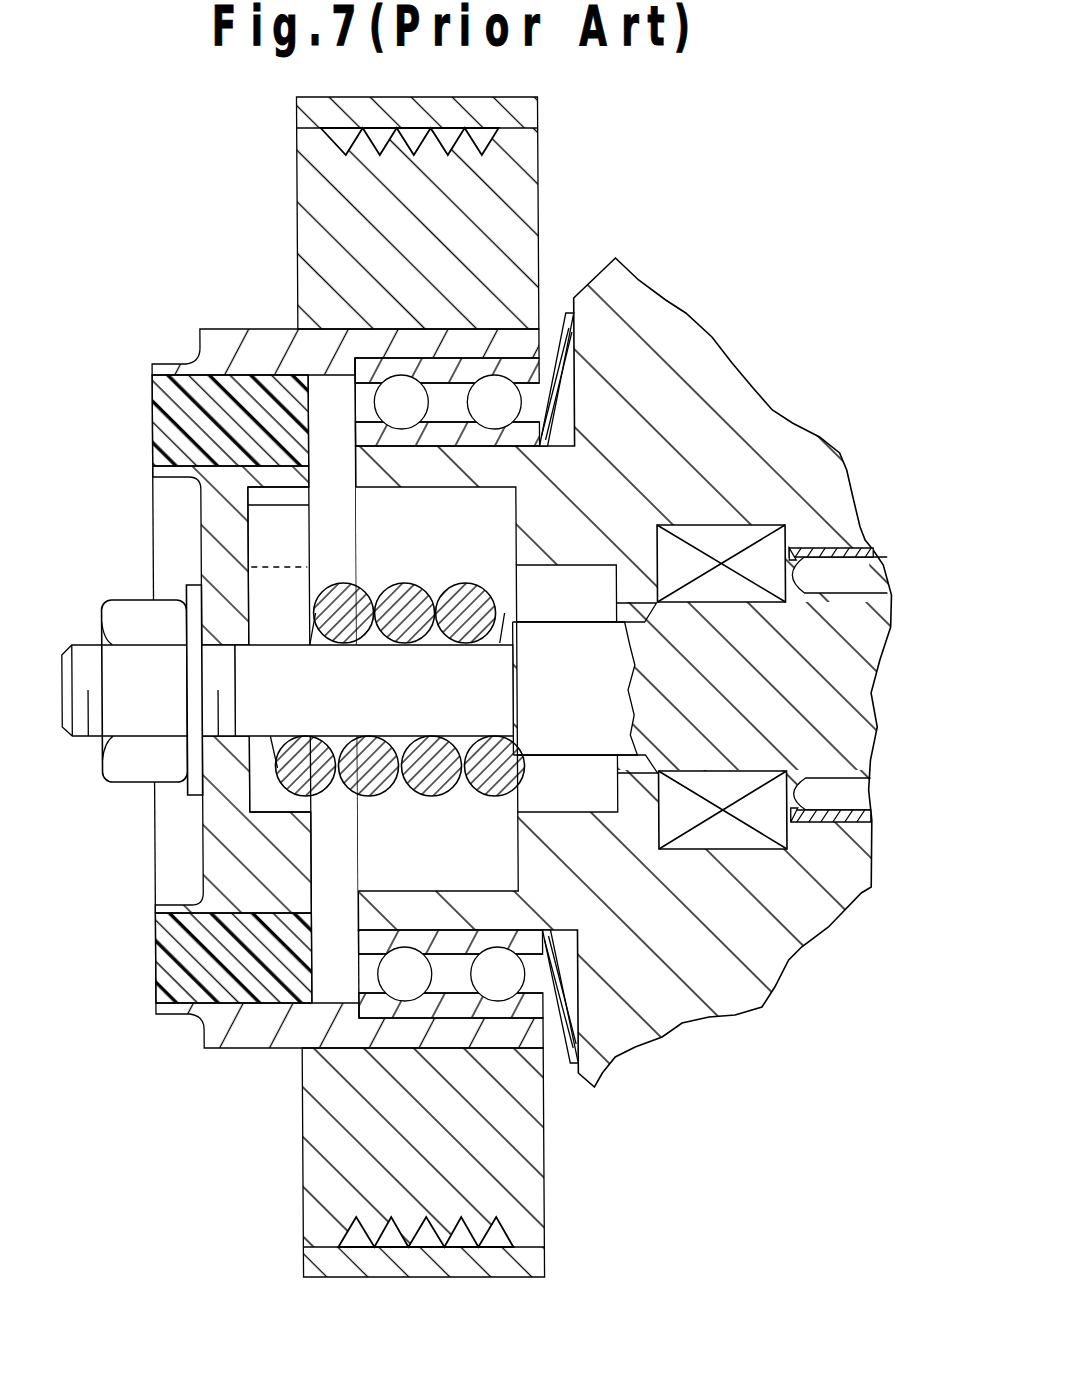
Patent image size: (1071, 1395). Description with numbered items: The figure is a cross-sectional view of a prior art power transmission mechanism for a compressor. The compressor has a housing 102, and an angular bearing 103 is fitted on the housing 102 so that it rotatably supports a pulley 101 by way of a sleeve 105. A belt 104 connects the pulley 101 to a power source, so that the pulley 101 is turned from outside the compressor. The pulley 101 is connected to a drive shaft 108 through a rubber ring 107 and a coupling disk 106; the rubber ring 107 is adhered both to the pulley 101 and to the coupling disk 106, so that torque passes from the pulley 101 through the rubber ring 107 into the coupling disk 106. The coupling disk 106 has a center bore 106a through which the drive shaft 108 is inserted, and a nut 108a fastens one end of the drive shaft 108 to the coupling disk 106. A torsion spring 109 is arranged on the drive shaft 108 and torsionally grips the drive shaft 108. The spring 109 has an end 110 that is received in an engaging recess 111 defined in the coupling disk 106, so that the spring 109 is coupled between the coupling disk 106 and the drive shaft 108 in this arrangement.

The pulley 101 is at (309, 186).
The housing 102 is at (611, 272).
The angular bearing 103 is at (508, 392).
The belt 104 is at (531, 106).
The sleeve 105 is at (242, 340).
The coupling disk 106 is at (212, 518).
The center bore 106a is at (240, 725).
The rubber ring 107 is at (163, 419).
The drive shaft 108 is at (870, 697).
The nut 108a is at (123, 612).
The torsion spring 109 is at (448, 782).
The end 110 is at (300, 548).
The engaging recess 111 is at (311, 498).